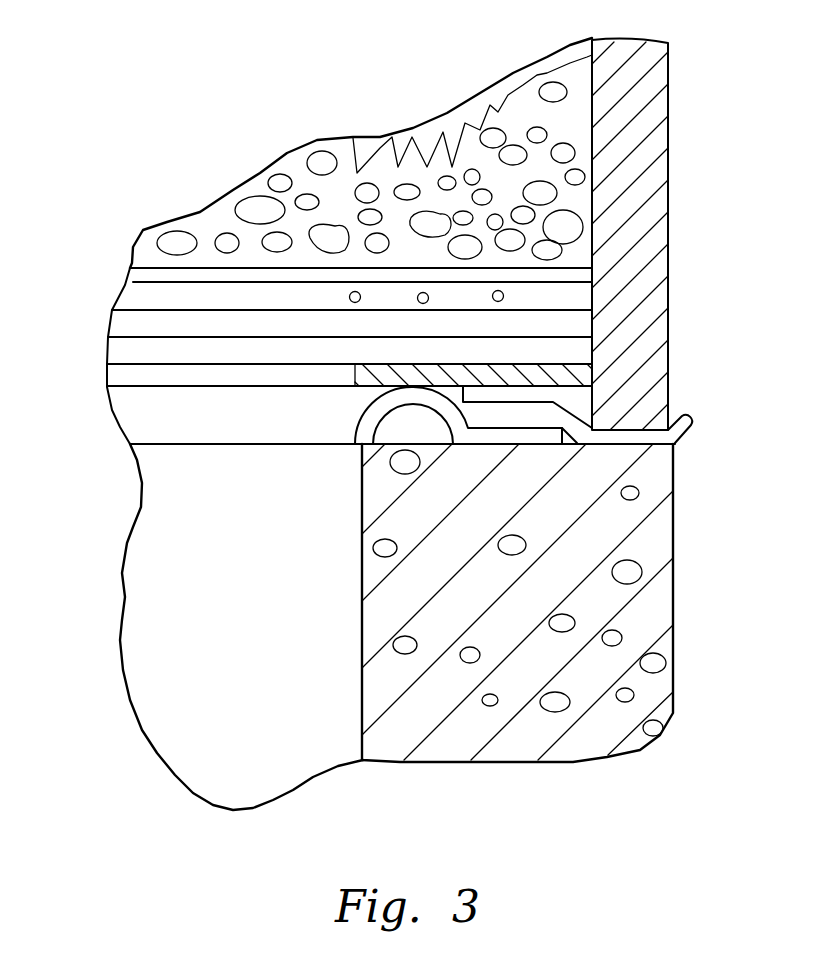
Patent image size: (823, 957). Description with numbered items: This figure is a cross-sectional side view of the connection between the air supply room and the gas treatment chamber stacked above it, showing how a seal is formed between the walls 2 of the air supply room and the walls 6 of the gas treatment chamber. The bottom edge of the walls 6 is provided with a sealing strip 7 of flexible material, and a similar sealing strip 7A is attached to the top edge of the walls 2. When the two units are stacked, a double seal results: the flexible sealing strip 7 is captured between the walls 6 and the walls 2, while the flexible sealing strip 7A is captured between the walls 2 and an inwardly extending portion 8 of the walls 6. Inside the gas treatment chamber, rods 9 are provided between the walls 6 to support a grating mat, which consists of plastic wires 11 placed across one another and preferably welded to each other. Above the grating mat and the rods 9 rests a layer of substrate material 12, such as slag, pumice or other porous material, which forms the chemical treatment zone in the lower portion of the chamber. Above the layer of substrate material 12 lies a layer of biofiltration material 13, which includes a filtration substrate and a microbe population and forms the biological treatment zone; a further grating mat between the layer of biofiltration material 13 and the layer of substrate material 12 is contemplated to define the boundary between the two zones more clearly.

The walls of air supply room 2 is at (637, 688).
The walls of gas treatment chamber 6 is at (645, 155).
The sealing strip 7 is at (690, 436).
The sealing strip 7A is at (477, 445).
The inwardly extending portion 8 is at (557, 364).
The rods 9 is at (138, 321).
The plastic wires 11 is at (348, 292).
The layer of substrate material 12 is at (543, 212).
The layer of biofiltration material 13 is at (460, 152).